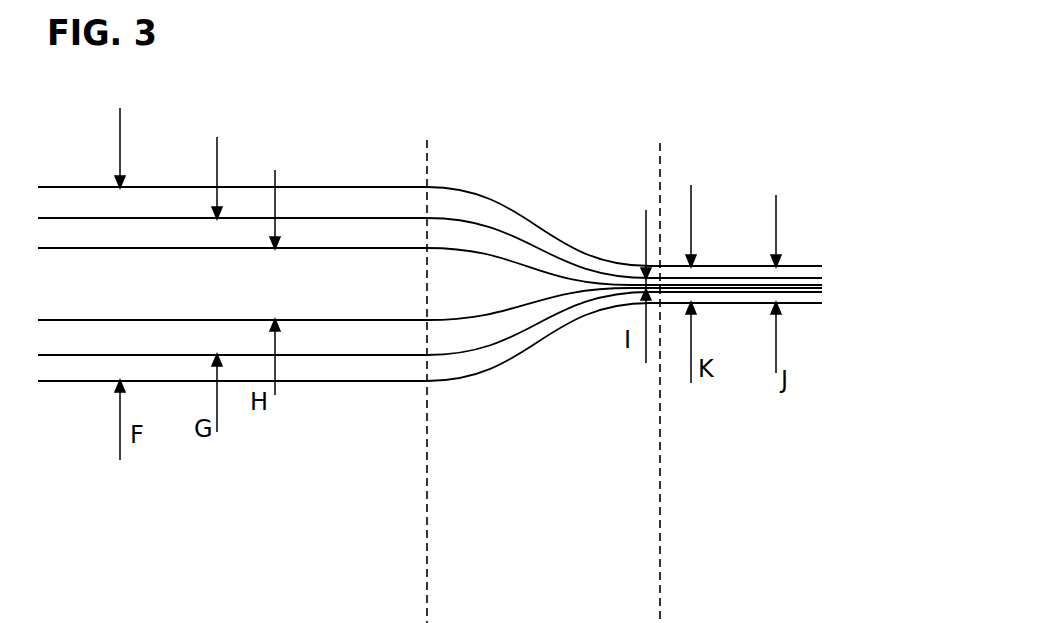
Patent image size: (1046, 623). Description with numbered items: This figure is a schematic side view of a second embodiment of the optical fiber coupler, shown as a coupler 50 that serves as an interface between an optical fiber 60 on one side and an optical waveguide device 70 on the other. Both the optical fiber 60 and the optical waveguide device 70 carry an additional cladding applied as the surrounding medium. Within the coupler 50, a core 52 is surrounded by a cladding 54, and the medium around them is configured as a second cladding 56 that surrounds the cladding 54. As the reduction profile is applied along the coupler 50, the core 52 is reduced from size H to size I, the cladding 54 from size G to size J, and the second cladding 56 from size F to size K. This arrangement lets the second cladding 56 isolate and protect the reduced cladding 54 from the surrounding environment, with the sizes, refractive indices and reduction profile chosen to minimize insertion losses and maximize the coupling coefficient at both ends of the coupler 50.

The coupler 50 is at (542, 304).
The core 52 is at (522, 290).
The cladding 54 is at (488, 330).
The second cladding 56 is at (457, 380).
The optical fiber 60 is at (35, 121).
The optical waveguide device 70 is at (878, 115).